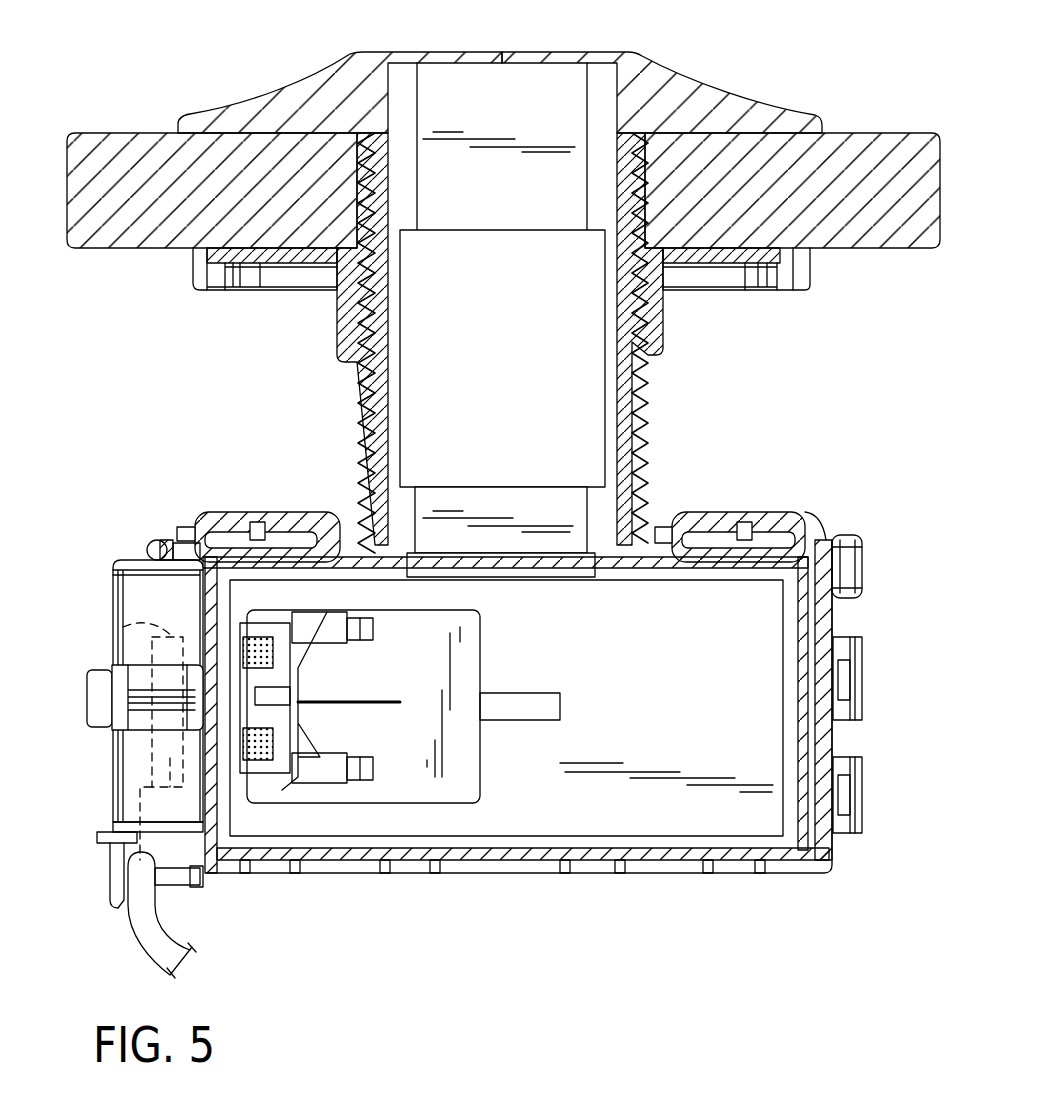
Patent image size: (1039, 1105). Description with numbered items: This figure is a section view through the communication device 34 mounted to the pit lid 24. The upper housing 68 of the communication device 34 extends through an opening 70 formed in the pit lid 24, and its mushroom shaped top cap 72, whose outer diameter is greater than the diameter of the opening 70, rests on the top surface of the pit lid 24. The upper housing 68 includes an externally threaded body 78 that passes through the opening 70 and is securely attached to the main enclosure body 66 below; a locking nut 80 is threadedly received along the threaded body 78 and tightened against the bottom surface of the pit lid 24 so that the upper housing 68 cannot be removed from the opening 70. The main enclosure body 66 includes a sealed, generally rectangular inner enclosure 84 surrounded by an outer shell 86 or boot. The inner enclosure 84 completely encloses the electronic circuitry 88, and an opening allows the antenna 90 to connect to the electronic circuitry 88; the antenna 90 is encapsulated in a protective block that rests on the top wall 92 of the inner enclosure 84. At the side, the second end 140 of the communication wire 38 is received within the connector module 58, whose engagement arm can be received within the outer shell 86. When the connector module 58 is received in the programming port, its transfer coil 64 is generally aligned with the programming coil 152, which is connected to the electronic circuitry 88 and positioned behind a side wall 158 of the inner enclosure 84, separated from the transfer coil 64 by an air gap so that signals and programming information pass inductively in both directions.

The pit lid 24 is at (105, 153).
The communication device 34 is at (852, 484).
The communication wire 38 is at (160, 940).
The connector module 58 is at (104, 605).
The transfer coil 64 is at (125, 632).
The main enclosure body 66 is at (510, 902).
The upper housing 68 is at (352, 433).
The opening 70 is at (680, 130).
The top cap 72 is at (317, 100).
The externally threaded body 78 is at (638, 410).
The locking nut 80 is at (197, 267).
The inner enclosure 84 is at (660, 852).
The outer shell 86 is at (793, 862).
The electronic circuitry 88 is at (486, 637).
The antenna 90 is at (532, 88).
The top wall 92 is at (663, 575).
The second end 140 is at (140, 872).
The programming coil 152 is at (260, 637).
The side wall 158 is at (213, 807).